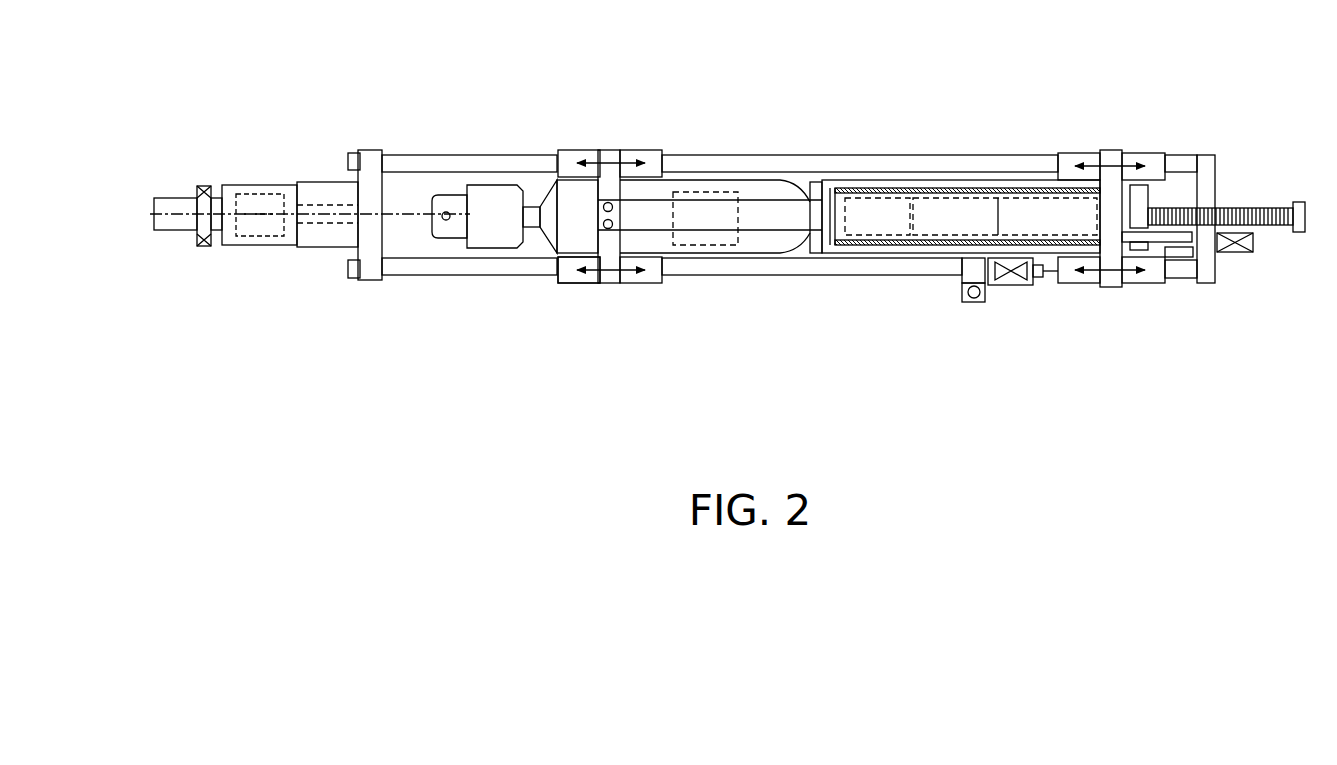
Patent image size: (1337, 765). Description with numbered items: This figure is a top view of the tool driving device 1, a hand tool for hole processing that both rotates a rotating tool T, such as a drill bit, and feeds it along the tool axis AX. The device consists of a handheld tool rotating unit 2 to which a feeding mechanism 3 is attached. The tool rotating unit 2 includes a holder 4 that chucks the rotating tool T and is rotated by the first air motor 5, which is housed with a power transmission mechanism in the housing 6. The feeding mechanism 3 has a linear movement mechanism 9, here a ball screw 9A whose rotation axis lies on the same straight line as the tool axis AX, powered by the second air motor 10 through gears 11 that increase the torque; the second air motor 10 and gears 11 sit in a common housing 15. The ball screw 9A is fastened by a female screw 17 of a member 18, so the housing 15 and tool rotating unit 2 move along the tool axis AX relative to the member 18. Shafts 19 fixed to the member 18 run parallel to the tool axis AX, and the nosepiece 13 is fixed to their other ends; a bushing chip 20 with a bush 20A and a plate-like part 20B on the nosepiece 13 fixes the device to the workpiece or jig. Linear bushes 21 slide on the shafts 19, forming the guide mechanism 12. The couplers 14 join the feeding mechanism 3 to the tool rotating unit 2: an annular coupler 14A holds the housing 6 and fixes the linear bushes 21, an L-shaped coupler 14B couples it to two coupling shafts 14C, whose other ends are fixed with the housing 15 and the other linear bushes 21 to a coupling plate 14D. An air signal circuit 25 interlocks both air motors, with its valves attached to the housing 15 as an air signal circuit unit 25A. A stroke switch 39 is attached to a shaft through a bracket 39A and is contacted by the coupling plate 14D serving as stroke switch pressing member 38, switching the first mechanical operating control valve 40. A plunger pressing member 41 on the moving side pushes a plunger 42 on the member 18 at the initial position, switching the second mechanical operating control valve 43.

The tool driving device 1 is at (388, 76).
The tool rotating unit 2 is at (723, 260).
The feeding mechanism 3 is at (920, 153).
The holder 4 is at (497, 190).
The first air motor 5 is at (708, 196).
The housing 6 is at (680, 255).
The linear movement mechanism 9 is at (1268, 230).
The ball screw 9A is at (1250, 208).
The second air motor 10 is at (877, 180).
The gears 11 is at (943, 180).
The guide mechanism 12 is at (567, 380).
The nosepiece 13 is at (290, 182).
The couplers 14 is at (752, 188).
The annular coupler 14A is at (603, 152).
The L-shaped coupler 14B is at (652, 200).
The coupling shafts 14C is at (848, 183).
The coupling plate 14D is at (1112, 160).
The housing 15 is at (920, 256).
The female screw 17 is at (1207, 240).
The member 18 is at (1205, 165).
The shafts 19 is at (538, 268).
The bushing chip 20 is at (133, 116).
The bush 20A is at (172, 196).
The plate-like part 20B is at (204, 186).
The linear bushes 21 is at (577, 270).
The air signal circuit 25 is at (1010, 188).
The air signal circuit unit 25A is at (1042, 205).
The stroke switch pressing member 38 is at (1110, 282).
The stroke switch 39 is at (1037, 278).
The bracket 39A is at (962, 292).
The first mechanical operating control valve 40 is at (1000, 286).
The plunger pressing member 41 is at (1180, 250).
The plunger 42 is at (1192, 280).
The second mechanical operating control valve 43 is at (1240, 252).
The tool axis AX is at (312, 215).
The rotating tool T is at (399, 283).